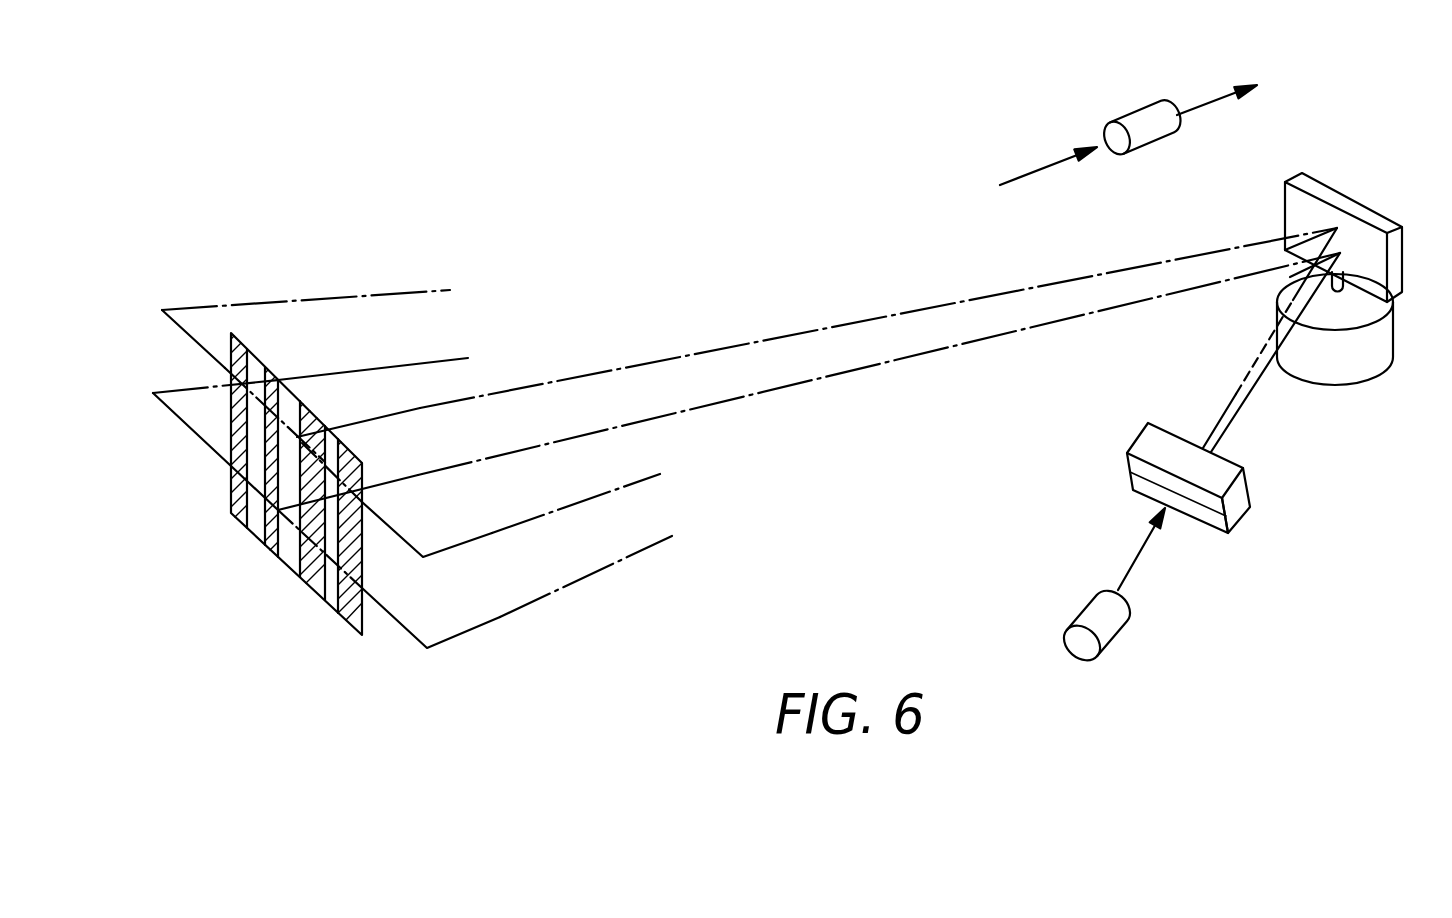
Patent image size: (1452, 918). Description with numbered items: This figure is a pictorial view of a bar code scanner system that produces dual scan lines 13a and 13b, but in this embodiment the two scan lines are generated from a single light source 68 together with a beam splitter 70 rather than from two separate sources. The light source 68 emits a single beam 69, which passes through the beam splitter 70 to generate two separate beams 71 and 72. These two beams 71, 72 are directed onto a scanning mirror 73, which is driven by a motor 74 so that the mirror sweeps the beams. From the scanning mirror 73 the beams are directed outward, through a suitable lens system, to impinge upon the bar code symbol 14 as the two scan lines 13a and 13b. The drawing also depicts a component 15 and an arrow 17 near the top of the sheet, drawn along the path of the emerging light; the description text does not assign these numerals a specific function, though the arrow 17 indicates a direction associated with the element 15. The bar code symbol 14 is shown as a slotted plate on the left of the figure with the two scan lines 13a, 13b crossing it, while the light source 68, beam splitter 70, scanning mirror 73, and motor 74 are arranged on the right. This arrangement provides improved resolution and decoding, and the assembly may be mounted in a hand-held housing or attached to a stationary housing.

The scan line 13a is at (207, 447).
The scan line 13b is at (185, 332).
The bar code symbol 14 is at (257, 535).
The lens 15 is at (1127, 118).
The scan direction arrow 17 is at (1198, 108).
The light source 68 is at (1110, 623).
The beam 69 is at (1128, 562).
The beam splitter 70 is at (1242, 520).
The beam 71 is at (1248, 373).
The beam 72 is at (1233, 412).
The scanning mirror 73 is at (1337, 188).
The motor 74 is at (1363, 363).